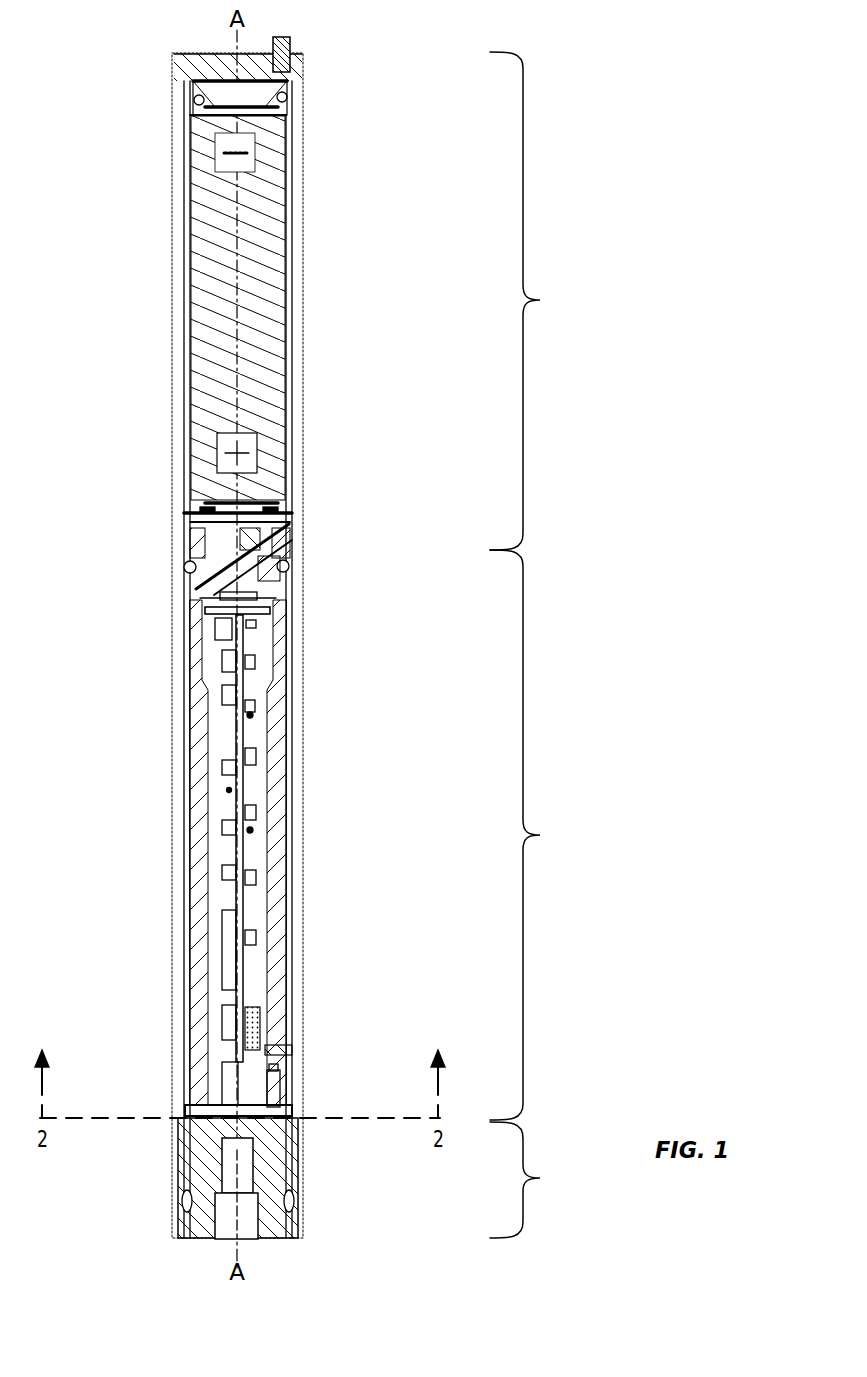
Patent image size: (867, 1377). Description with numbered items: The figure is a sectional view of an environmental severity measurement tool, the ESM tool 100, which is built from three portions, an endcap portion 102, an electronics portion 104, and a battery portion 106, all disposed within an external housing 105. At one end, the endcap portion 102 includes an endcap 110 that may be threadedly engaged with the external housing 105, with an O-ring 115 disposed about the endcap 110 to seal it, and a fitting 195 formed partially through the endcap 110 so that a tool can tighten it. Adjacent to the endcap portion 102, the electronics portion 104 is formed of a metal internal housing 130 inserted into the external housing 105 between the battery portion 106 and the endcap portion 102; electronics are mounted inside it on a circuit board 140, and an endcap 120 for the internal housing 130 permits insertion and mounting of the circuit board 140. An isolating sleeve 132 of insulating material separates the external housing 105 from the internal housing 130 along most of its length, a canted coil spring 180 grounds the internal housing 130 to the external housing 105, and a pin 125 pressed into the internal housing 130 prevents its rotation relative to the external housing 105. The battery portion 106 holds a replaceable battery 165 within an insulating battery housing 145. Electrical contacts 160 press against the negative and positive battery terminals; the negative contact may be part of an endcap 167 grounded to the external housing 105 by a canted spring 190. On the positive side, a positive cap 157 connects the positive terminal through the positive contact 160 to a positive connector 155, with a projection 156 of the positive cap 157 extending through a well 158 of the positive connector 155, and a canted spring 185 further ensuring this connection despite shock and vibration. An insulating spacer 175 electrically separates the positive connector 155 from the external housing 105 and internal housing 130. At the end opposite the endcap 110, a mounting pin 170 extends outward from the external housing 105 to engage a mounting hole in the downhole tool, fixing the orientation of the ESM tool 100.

The ESM tool 100 is at (575, 84).
The endcap portion 102 is at (555, 1180).
The electronics portion 104 is at (555, 835).
The external housing 105 is at (300, 163).
The battery portion 106 is at (555, 301).
The endcap 110 is at (287, 1233).
The O-ring 115 is at (296, 1197).
The endcap 120 is at (297, 1110).
The pin 125 is at (290, 1047).
The internal housing 130 is at (262, 1025).
The isolating sleeve 132 is at (300, 935).
The circuit board 140 is at (243, 1002).
The battery housing 145 is at (302, 410).
The positive connector 155 is at (270, 537).
The projection 156 is at (196, 589).
The positive cap 157 is at (186, 513).
The well 158 is at (294, 534).
The electrical contacts 160 is at (253, 100).
The battery 165 is at (263, 325).
The endcap 167 is at (220, 85).
The mounting pin 170 is at (291, 47).
The insulating spacer 175 is at (277, 580).
The canted coil spring 180 is at (289, 563).
The canted spring 185 is at (186, 565).
The canted spring 190 is at (195, 108).
The fitting 195 is at (247, 1213).